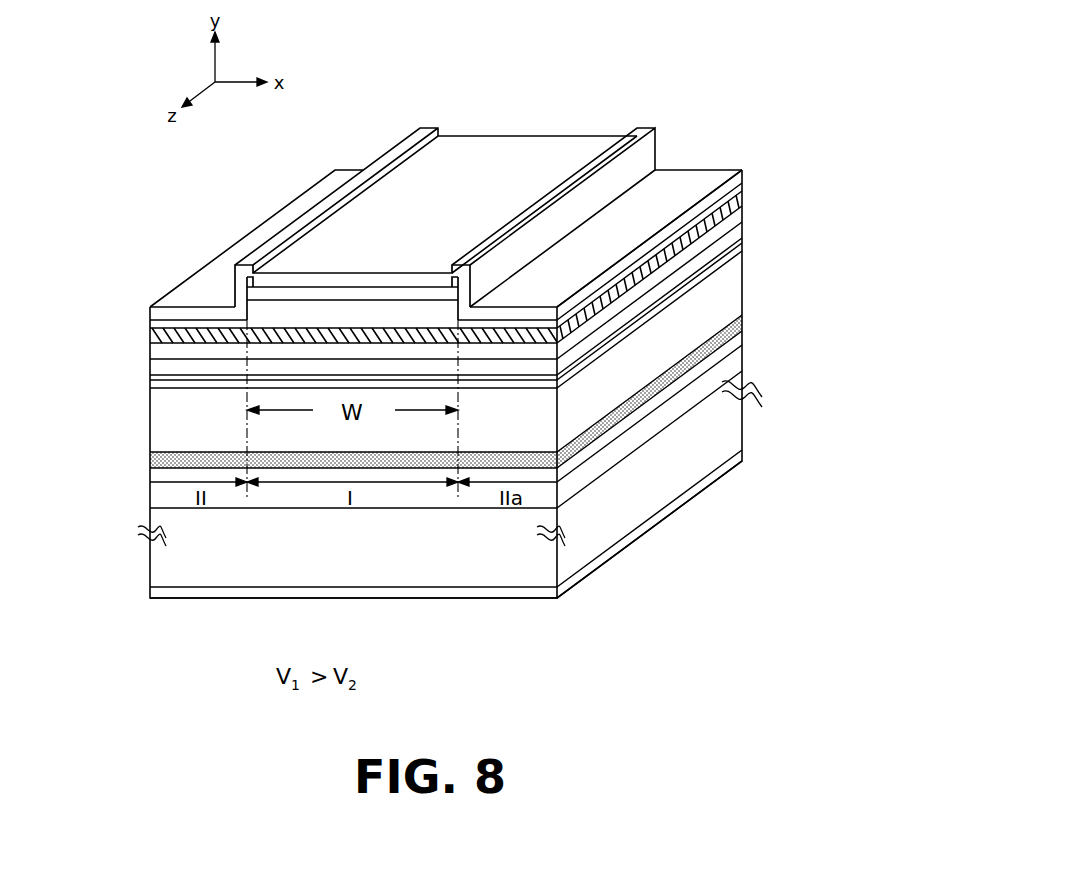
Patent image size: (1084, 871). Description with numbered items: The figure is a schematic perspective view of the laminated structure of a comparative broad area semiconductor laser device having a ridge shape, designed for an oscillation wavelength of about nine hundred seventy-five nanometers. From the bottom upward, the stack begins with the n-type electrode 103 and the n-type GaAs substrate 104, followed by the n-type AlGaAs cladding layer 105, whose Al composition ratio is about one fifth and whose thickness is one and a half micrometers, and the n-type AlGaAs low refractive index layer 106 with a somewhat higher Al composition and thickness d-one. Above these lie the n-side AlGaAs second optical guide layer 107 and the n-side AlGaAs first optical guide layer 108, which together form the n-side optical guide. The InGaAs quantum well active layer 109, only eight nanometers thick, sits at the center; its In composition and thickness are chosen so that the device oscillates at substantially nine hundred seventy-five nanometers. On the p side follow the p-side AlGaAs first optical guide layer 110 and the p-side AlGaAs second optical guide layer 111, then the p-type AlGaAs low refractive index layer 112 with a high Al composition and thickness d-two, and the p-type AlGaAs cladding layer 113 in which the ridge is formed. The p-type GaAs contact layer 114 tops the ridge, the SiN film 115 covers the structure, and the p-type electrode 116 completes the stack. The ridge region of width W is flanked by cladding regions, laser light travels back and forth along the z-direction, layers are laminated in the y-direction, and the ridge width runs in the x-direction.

The n-type electrode 103 is at (705, 490).
The n-type GaAs substrate 104 is at (735, 433).
The n-type AlGaAs cladding layer 105 is at (732, 367).
The n-type AlGaAs low refractive index layer 106 is at (744, 333).
The n-side AlGaAs second optical guide layer 107 is at (732, 290).
The n-side AlGaAs first optical guide layer 108 is at (744, 253).
The InGaAs quantum well active layer 109 is at (744, 243).
The p-side AlGaAs first optical guide layer 110 is at (744, 236).
The p-side AlGaAs second optical guide layer 111 is at (744, 221).
The p-type AlGaAs low refractive index layer 112 is at (744, 192).
The p-type AlGaAs cladding layer 113 is at (297, 310).
The p-type GaAs contact layer 114 is at (345, 290).
The SiN film 115 is at (744, 180).
The p-type electrode 116 is at (672, 182).